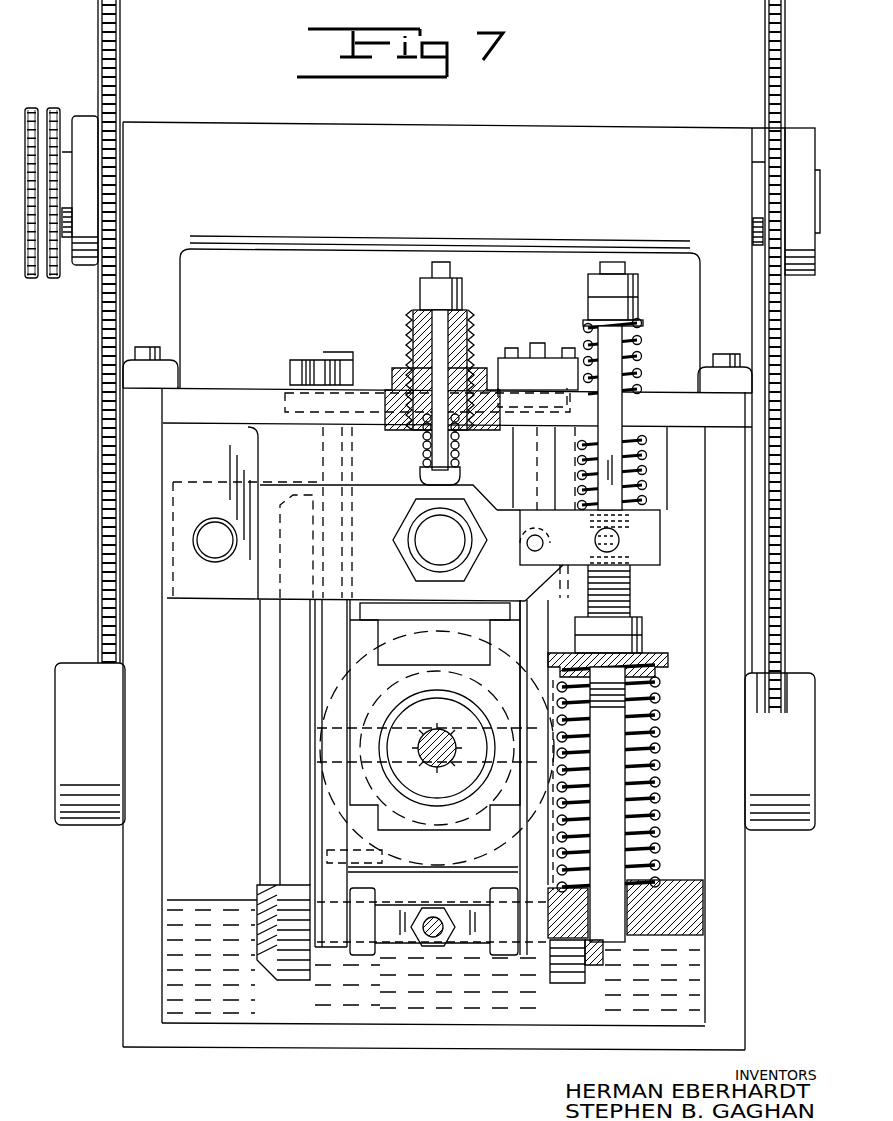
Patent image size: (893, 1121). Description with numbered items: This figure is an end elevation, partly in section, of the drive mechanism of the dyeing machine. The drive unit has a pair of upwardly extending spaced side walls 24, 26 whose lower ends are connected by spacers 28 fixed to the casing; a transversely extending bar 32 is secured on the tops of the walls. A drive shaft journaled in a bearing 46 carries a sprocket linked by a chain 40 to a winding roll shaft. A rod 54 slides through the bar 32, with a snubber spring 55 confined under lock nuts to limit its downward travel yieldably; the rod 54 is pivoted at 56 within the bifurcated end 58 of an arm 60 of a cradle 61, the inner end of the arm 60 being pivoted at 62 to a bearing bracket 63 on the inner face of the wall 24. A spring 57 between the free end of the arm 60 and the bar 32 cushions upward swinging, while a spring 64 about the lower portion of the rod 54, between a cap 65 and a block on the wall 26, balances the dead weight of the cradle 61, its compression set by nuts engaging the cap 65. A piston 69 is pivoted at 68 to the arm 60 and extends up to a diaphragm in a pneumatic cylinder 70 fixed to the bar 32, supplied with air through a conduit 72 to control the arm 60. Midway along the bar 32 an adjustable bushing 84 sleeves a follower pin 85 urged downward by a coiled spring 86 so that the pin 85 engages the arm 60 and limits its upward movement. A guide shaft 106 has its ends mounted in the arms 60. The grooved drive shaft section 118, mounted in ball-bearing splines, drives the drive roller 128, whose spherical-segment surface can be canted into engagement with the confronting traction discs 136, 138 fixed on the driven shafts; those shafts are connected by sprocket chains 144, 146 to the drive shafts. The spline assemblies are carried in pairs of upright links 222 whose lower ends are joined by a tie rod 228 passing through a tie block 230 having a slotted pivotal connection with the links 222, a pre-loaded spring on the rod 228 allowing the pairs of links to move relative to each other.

The side wall 24 is at (135, 535).
The side wall 26 is at (745, 990).
The spacers 28 is at (190, 1050).
The bar 32 is at (208, 395).
The chain 40 is at (47, 282).
The bearing 46 is at (185, 132).
The rod 54 is at (615, 268).
The snubber spring 55 is at (640, 356).
The pivot 56 is at (618, 538).
The spring 57 is at (640, 462).
The bifurcated end 58 is at (645, 555).
The arm 60 is at (655, 530).
The cradle 61 is at (305, 486).
The pivot 62 is at (215, 548).
The bearing bracket 63 is at (228, 435).
The spring 64 is at (665, 865).
The cap 65 is at (655, 655).
The pivot 68 is at (530, 548).
The piston 69 is at (540, 478).
The cylinder 70 is at (565, 365).
The conduit 72 is at (535, 352).
The adjustable bushing 84 is at (410, 345).
The follower pin 85 is at (470, 322).
The coiled spring 86 is at (420, 450).
The guide shaft 106 is at (440, 540).
The inner end section of drive shaft 118 is at (440, 790).
The drive roller 128 is at (317, 782).
The traction disc 136 is at (295, 985).
The traction disc 138 is at (565, 985).
The sprocket chain 144 is at (100, 455).
The sprocket chain 146 is at (780, 590).
The links 222 is at (317, 668).
The tie rod 228 is at (433, 945).
The tie block 230 is at (405, 945).